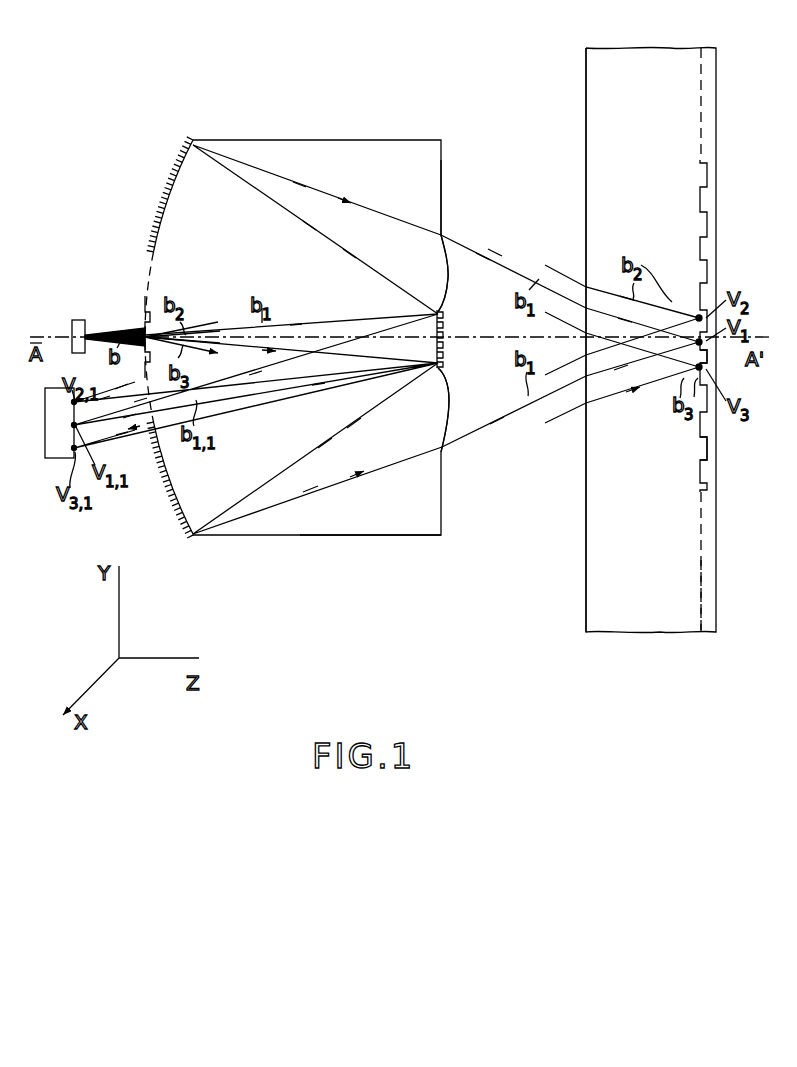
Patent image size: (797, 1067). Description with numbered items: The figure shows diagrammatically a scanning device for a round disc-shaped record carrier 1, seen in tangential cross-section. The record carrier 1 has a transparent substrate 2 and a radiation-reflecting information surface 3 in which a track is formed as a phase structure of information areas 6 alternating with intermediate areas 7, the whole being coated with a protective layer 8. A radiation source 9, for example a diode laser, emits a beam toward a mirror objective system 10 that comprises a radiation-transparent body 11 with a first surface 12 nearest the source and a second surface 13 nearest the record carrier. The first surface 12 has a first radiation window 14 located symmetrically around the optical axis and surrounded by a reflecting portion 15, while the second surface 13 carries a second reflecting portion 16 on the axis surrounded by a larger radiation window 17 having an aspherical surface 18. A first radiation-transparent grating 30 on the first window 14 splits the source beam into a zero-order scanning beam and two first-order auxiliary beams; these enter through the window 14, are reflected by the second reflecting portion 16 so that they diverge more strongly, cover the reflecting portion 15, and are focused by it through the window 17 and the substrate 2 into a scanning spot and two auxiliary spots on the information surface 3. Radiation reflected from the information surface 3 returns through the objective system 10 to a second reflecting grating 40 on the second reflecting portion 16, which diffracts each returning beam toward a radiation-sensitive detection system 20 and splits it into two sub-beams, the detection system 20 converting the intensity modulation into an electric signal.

The record carrier 1 is at (657, 32).
The transparent substrate 2 is at (628, 626).
The radiation-reflecting information surface 3 is at (697, 72).
The information areas 6 is at (707, 355).
The intermediate areas 7 is at (707, 250).
The protective layer 8 is at (710, 612).
The radiation source 9 is at (78, 320).
The objective system 10 is at (359, 122).
The radiation-transparent body 11 is at (373, 516).
The first surface 12 is at (150, 172).
The second surface 13 is at (450, 171).
The first radiation window 14 is at (149, 271).
The reflecting portion 15 is at (158, 208).
The second reflecting portion 16 is at (452, 350).
The radiation window 17 is at (448, 238).
The aspherical surface 18 is at (451, 279).
The radiation-sensitive detection system 20 is at (51, 458).
The first radiation-transparent grating 30 is at (143, 316).
The second reflecting grating 40 is at (450, 318).